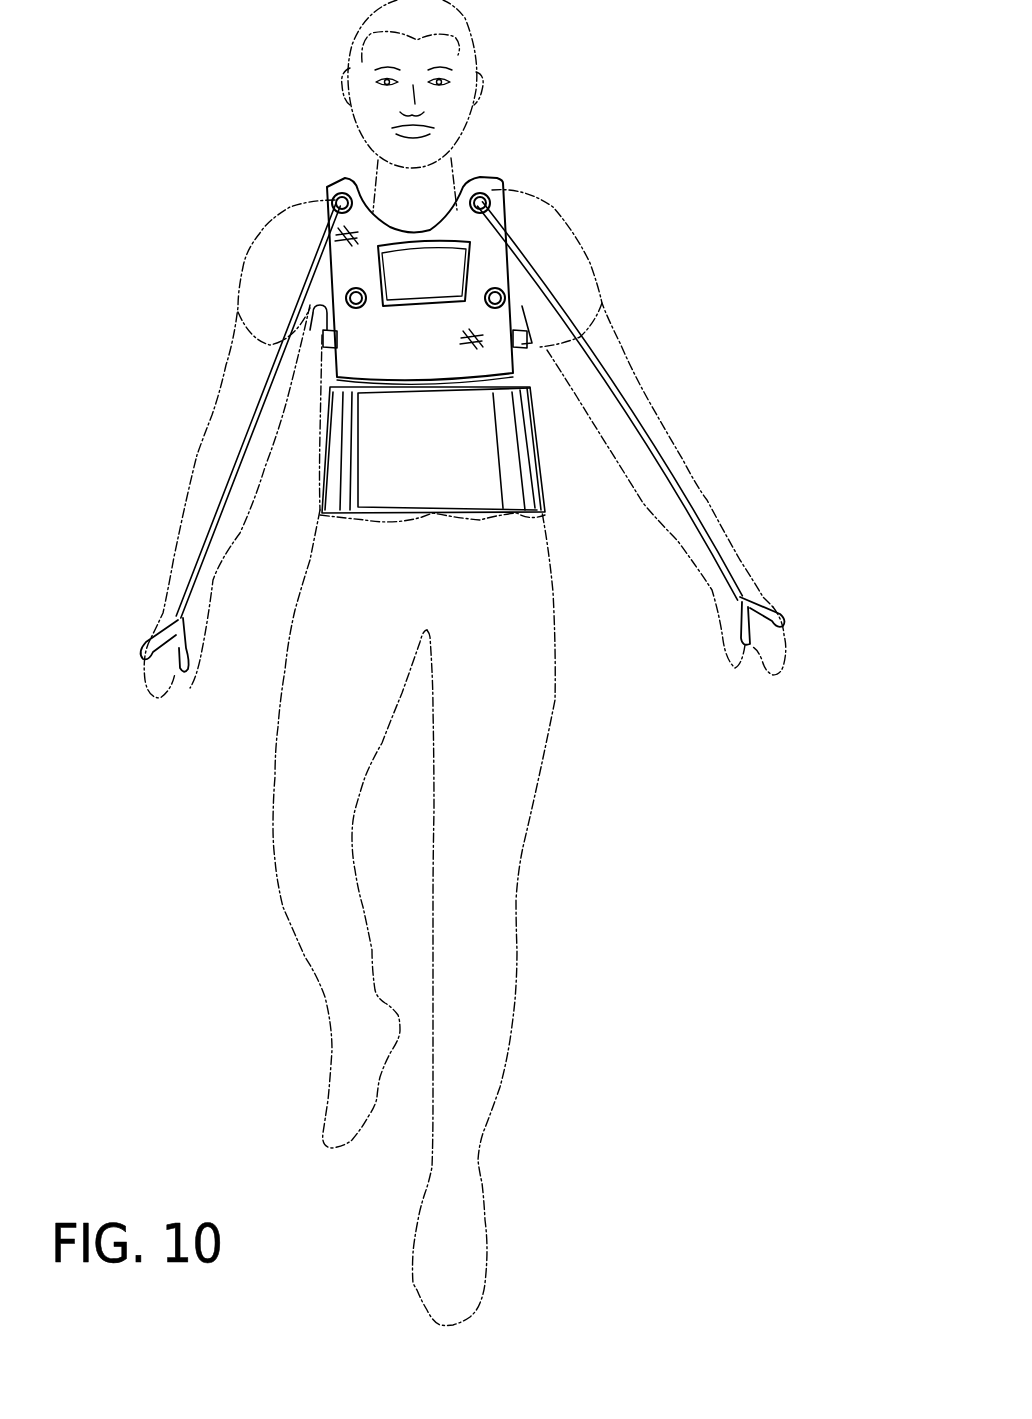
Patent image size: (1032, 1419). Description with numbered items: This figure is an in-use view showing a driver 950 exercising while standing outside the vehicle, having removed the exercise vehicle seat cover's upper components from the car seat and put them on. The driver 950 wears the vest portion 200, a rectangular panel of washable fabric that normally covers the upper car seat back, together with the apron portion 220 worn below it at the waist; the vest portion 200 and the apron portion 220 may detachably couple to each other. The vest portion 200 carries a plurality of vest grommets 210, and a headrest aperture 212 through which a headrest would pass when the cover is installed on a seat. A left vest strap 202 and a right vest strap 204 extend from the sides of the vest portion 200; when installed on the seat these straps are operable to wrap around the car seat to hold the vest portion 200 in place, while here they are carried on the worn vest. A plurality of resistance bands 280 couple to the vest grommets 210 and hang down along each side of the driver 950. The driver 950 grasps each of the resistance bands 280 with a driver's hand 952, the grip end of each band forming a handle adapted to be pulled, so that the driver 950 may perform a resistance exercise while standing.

The vest portion 200 is at (452, 356).
The left vest strap 202 is at (522, 337).
The right vest strap 204 is at (325, 343).
The vest grommets 210 is at (496, 288).
The headrest aperture 212 is at (377, 217).
The apron portion 220 is at (532, 465).
The resistance bands 280 is at (255, 412).
The driver 950 is at (535, 592).
The driver's hand 952 is at (777, 662).